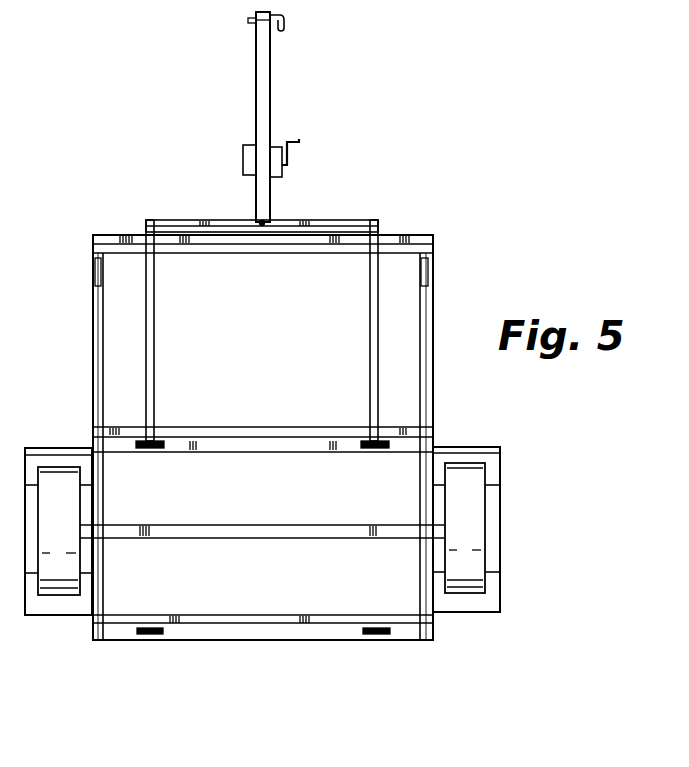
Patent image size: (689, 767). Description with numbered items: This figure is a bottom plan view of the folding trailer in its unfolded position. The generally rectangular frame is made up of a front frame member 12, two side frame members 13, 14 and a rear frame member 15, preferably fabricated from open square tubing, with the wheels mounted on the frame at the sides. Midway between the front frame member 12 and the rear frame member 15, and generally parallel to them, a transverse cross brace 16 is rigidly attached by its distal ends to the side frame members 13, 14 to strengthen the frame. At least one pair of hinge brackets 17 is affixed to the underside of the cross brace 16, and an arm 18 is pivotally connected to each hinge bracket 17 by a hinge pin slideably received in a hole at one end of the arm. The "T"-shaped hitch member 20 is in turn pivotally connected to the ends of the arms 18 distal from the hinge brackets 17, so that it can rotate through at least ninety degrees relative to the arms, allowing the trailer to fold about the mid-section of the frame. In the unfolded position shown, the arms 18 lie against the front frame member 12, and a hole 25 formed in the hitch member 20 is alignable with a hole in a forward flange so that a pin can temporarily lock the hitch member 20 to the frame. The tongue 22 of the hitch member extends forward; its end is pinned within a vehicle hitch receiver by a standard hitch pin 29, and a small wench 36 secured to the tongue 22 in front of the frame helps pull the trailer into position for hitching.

The front frame member 12 is at (404, 235).
The side frame member 13 is at (98, 308).
The side frame member 14 is at (431, 299).
The rear frame member 15 is at (313, 620).
The transverse cross brace 16 is at (271, 453).
The hinge brackets 17 is at (152, 432).
The arm 18 is at (154, 350).
The "T"-shaped hitch member 20 is at (313, 231).
The tongue 22 is at (272, 94).
The hole 25 is at (258, 221).
The hitch pin 29 is at (284, 20).
The wench 36 is at (243, 152).